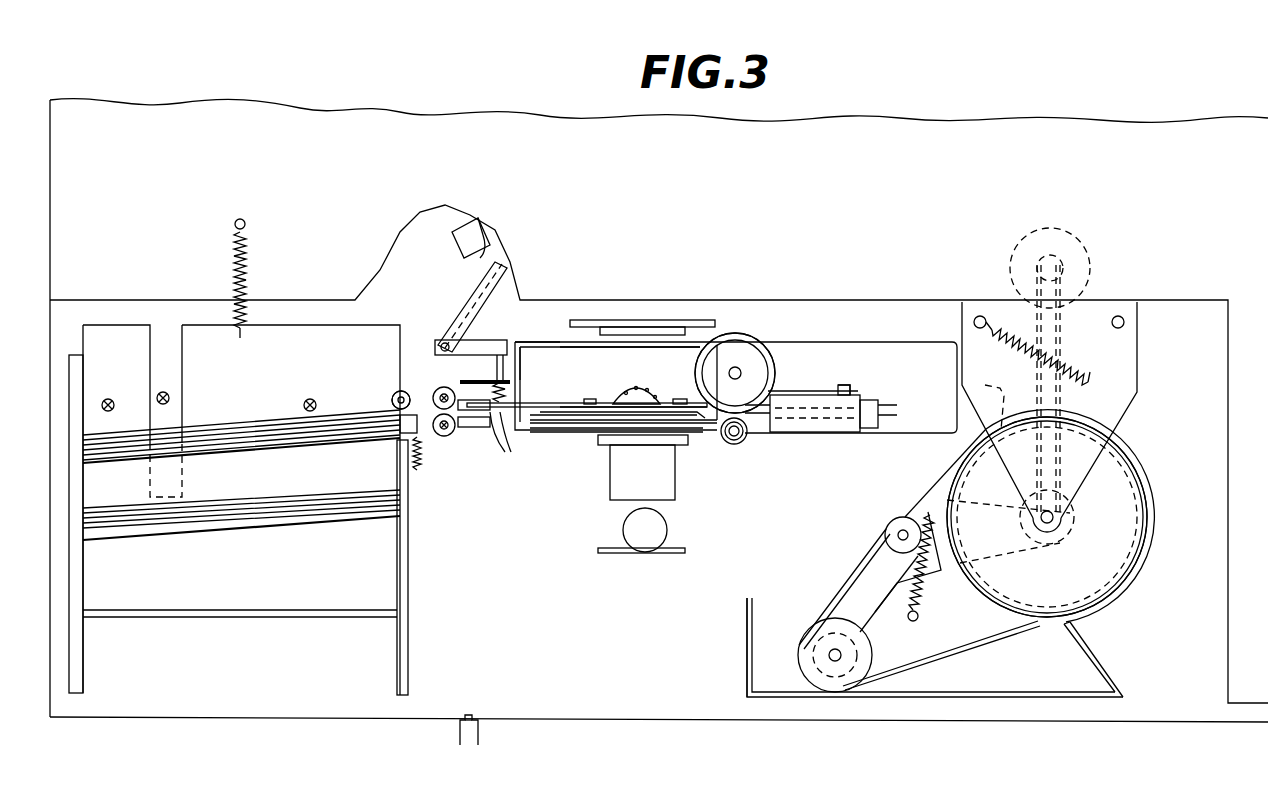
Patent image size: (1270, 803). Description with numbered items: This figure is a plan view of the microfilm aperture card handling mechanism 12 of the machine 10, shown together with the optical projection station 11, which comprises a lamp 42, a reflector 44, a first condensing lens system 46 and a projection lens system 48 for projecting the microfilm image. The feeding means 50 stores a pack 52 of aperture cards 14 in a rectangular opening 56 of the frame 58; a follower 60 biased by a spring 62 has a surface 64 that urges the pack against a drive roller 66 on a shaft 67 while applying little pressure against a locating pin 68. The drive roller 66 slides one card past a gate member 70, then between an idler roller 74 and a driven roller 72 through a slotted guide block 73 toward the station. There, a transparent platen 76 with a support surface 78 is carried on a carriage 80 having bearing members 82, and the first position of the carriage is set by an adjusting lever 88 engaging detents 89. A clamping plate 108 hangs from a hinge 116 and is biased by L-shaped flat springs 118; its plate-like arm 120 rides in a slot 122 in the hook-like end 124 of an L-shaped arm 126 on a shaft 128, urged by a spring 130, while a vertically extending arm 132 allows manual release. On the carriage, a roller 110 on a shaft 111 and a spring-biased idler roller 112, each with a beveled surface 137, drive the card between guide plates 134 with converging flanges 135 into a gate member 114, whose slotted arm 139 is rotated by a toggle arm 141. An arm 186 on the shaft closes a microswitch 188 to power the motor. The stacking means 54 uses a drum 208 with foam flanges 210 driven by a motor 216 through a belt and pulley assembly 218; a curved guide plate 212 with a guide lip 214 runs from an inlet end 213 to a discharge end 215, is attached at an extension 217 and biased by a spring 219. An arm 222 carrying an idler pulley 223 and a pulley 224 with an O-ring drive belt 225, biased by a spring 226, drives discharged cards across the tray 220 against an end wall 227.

The machine 10 is at (333, 98).
The optical projection station 11 is at (604, 472).
The microfilm aperture card handling mechanism 12 is at (566, 424).
The aperture card 14 is at (273, 410).
The lamp 42 is at (628, 533).
The reflector 44 is at (636, 556).
The first condensing lens system 46 is at (632, 480).
The projection lens system 48 is at (640, 324).
The feeding means 50 is at (446, 446).
The pack of aperture cards 52 is at (225, 440).
The stacking means 54 is at (1148, 448).
The rectangular opening 56 is at (84, 645).
The frame 58 is at (298, 710).
The follower 60 is at (325, 602).
The spring 62 is at (246, 325).
The surface 64 is at (170, 520).
The drive roller 66 is at (391, 399).
The shaft 67 is at (396, 392).
The locating pin 68 is at (170, 395).
The gate member 70 is at (402, 438).
The roller 72 is at (454, 436).
The slotted guide block 73 is at (498, 448).
The idler roller 74 is at (432, 390).
The transparent platen 76 is at (560, 422).
The support surface 78 is at (700, 425).
The carriage 80 is at (583, 362).
The bearing members 82 is at (520, 346).
The adjusting lever 88 is at (462, 740).
The detents 89 is at (469, 716).
The clamping plate 108 is at (639, 386).
The roller 110 is at (762, 352).
The shaft 111 is at (740, 367).
The idler roller 112 is at (738, 444).
The gate member 114 is at (868, 400).
The hinge 116 is at (628, 384).
The L-shaped flat springs 118 is at (678, 398).
The plate-like arm 120 is at (587, 389).
The slot 122 is at (485, 382).
The hook-like end 124 is at (523, 428).
The L-shaped arm 126 is at (527, 338).
The shaft 128 is at (440, 342).
The spring 130 is at (516, 400).
The vertically extending arm 132 is at (552, 402).
The guide plates 134 is at (812, 394).
The converging flanges 135 is at (770, 426).
The beveled surface 137 is at (740, 333).
The arm 139 is at (848, 384).
The toggle arm 141 is at (848, 386).
The arm 186 is at (462, 296).
The microswitch 188 is at (470, 226).
The drum 208 is at (1090, 561).
The flanges 210 is at (1150, 482).
The curved guide plate 212 is at (1158, 505).
The inlet end 213 is at (994, 424).
The guide lip 214 is at (985, 385).
The discharge end 215 is at (1058, 622).
The motor 216 is at (1078, 236).
The extension 217 is at (1108, 663).
The belt and pulley assembly 218 is at (1066, 346).
The spring 219 is at (990, 330).
The tray 220 is at (880, 700).
The arm 222 is at (878, 558).
The idler pulley 223 is at (893, 521).
The pulley 224 is at (812, 636).
The O-ring drive belt 225 is at (855, 570).
The spring 226 is at (926, 597).
The end wall 227 is at (746, 656).